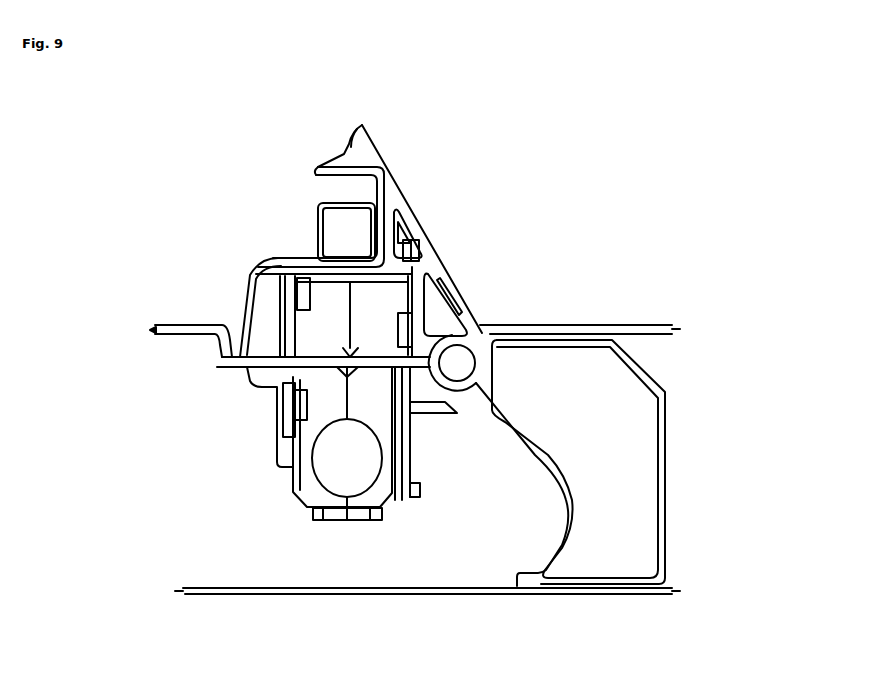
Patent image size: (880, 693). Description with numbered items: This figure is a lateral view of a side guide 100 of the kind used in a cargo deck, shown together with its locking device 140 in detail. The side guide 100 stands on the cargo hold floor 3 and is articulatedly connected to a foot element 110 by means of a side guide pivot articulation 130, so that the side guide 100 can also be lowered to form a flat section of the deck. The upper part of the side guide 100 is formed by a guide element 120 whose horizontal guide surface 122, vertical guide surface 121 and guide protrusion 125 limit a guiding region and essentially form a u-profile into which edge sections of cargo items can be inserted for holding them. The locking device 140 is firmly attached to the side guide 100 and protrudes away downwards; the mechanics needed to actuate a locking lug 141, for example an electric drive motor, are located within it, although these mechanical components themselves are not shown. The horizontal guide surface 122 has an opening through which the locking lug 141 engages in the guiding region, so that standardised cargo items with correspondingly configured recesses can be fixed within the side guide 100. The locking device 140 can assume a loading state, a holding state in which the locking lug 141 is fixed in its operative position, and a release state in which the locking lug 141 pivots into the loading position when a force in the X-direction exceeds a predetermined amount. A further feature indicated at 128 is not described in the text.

The side guide 100 is at (223, 165).
The cargo hold floor 3 is at (617, 323).
The foot element 110 is at (667, 428).
The guide element 120 is at (411, 197).
The vertical guide surface 121 is at (385, 163).
The guide protrusion 125 is at (346, 153).
The slot 128 is at (457, 296).
The locking lug 141 is at (337, 229).
The horizontal guide surface 122 is at (247, 285).
The locking device 140 is at (289, 483).
The side guide pivot articulation 130 is at (455, 370).